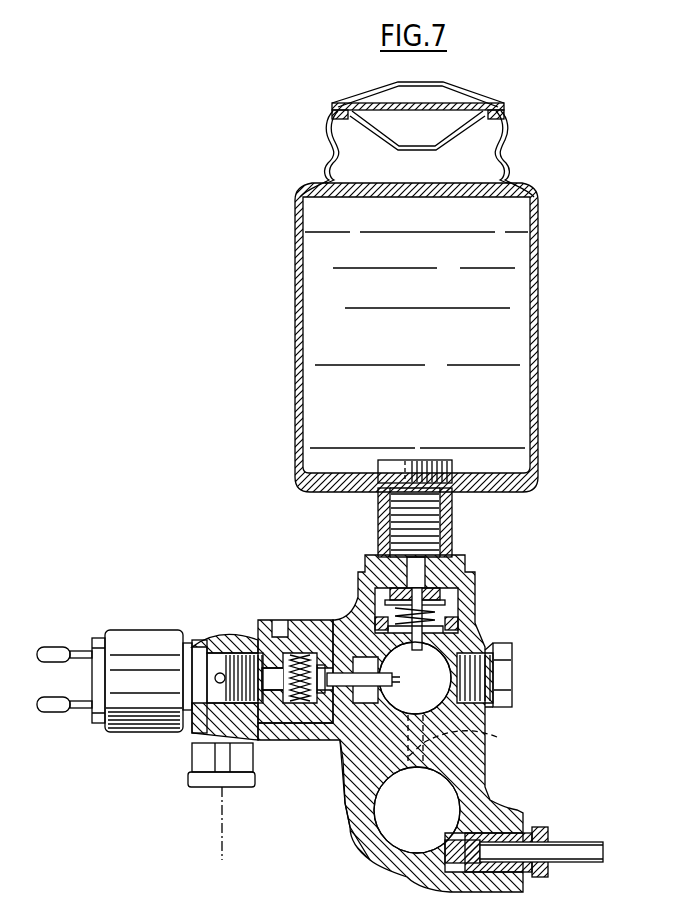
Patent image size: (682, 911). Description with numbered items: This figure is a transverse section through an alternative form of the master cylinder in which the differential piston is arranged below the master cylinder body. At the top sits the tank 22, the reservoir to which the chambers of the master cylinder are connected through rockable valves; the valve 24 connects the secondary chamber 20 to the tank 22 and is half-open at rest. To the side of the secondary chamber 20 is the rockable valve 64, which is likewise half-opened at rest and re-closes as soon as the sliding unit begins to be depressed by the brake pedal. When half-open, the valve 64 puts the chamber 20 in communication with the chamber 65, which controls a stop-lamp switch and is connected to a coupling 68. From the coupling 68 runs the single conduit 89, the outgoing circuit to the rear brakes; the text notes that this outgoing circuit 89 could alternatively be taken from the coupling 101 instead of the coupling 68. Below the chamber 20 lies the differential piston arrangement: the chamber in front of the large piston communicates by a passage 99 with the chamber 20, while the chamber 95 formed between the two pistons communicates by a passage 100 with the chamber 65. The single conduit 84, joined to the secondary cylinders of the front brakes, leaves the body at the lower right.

The tank 22 is at (418, 333).
The valve 24 is at (447, 575).
The chamber 65 is at (298, 640).
The rockable valve 64 is at (329, 665).
The secondary chamber 20 is at (430, 688).
The coupling 101 is at (513, 682).
The coupling 68 is at (190, 757).
The passage 99 is at (493, 736).
The passage 100 is at (357, 737).
The chamber 95 is at (432, 821).
The single conduit 89 is at (220, 820).
The single conduit 84 is at (583, 842).